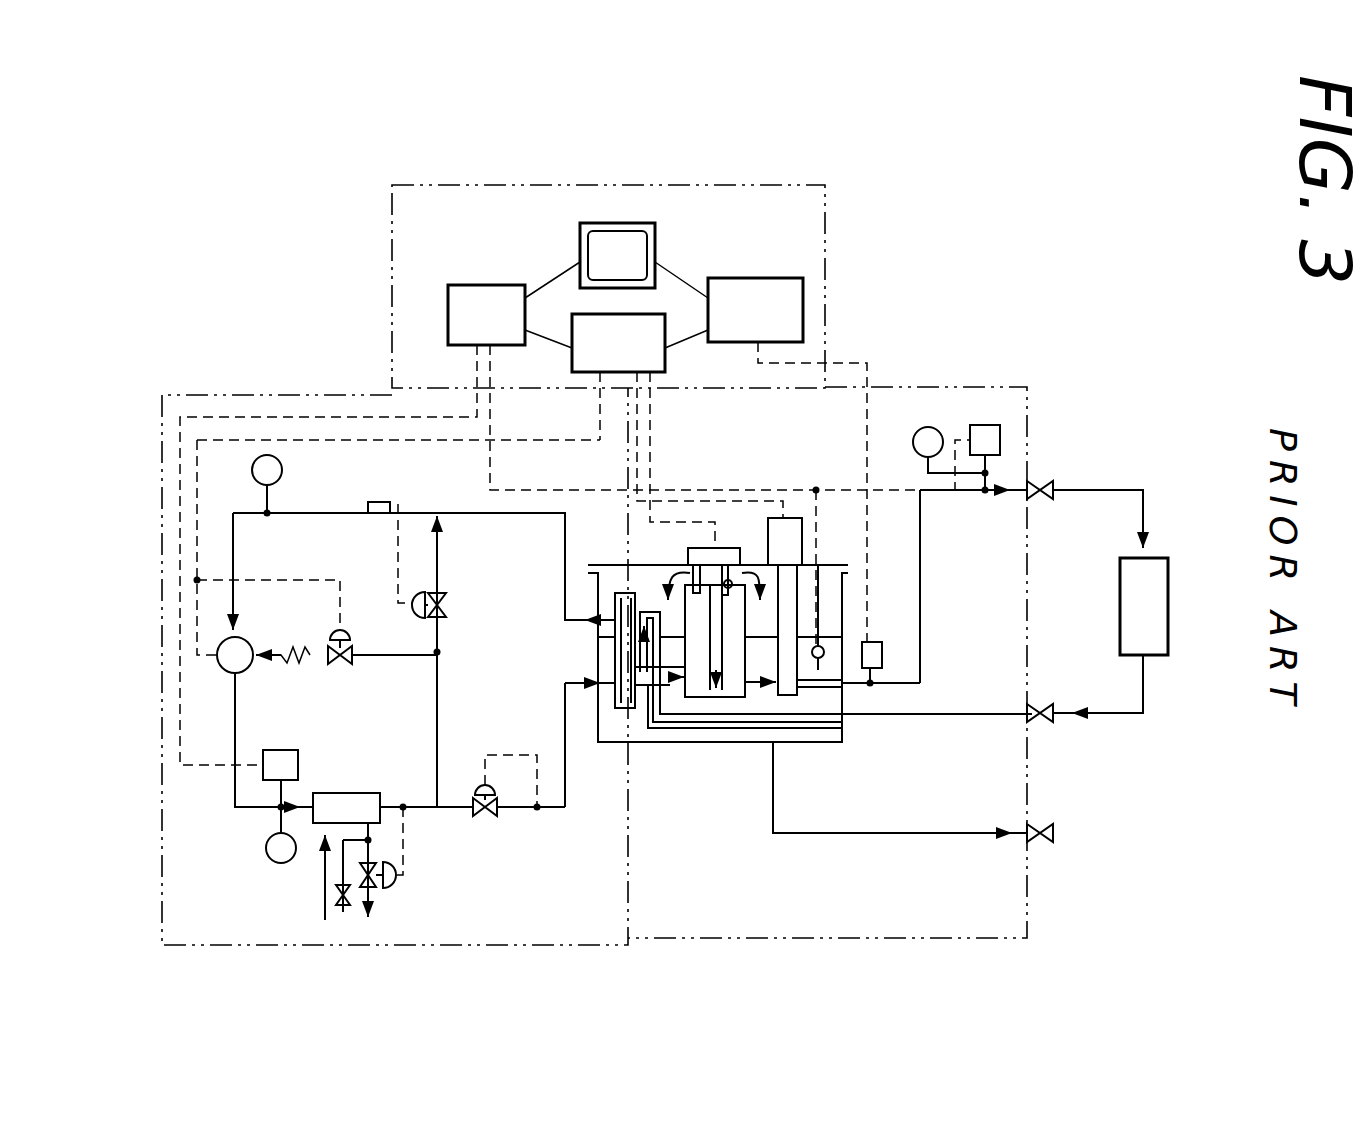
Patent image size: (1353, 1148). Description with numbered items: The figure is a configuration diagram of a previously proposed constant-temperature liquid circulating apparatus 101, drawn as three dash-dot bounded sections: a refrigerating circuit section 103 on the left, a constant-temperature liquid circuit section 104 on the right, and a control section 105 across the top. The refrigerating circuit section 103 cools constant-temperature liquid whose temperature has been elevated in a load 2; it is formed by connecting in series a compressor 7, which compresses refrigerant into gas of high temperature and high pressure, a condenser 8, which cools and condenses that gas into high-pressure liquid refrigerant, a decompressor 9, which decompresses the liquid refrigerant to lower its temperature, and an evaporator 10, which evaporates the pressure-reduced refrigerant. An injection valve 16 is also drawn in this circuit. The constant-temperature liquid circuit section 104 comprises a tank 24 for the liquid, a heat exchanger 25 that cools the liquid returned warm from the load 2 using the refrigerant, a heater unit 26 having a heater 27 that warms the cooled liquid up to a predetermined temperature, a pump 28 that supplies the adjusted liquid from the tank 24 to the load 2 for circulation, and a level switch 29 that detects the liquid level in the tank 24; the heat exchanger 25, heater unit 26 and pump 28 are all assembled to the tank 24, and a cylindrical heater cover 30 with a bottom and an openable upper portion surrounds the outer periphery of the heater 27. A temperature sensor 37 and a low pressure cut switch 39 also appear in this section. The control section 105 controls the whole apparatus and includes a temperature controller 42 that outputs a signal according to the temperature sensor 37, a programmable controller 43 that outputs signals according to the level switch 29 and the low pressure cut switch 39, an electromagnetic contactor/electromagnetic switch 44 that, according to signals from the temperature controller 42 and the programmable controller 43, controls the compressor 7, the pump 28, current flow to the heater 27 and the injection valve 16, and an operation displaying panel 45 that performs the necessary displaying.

The load 2 is at (1155, 627).
The compressor 7 is at (231, 666).
The condenser 8 is at (350, 794).
The decompressor 9 is at (485, 817).
The evaporator 10 is at (775, 624).
The injection valve 16 is at (346, 633).
The tank 24 is at (697, 744).
The heat exchanger 25 is at (632, 708).
The heater unit 26 is at (706, 542).
The heater 27 is at (712, 692).
The pump 28 is at (790, 538).
The level switch 29 is at (823, 648).
The heater cover 30 is at (752, 700).
The temperature sensor 37 is at (882, 655).
The low pressure cut switch 39 is at (986, 428).
The temperature controller 42 is at (772, 327).
The programmable controller 43 is at (504, 332).
The electromagnetic contactor/electromagnetic switch 44 is at (636, 361).
The operation displaying panel 45 is at (636, 272).
The constant-temperature liquid circulating apparatus 101 is at (1014, 218).
The refrigerating circuit section 103 is at (166, 372).
The constant-temperature liquid circuit section 104 is at (1044, 374).
The control section 105 is at (838, 274).